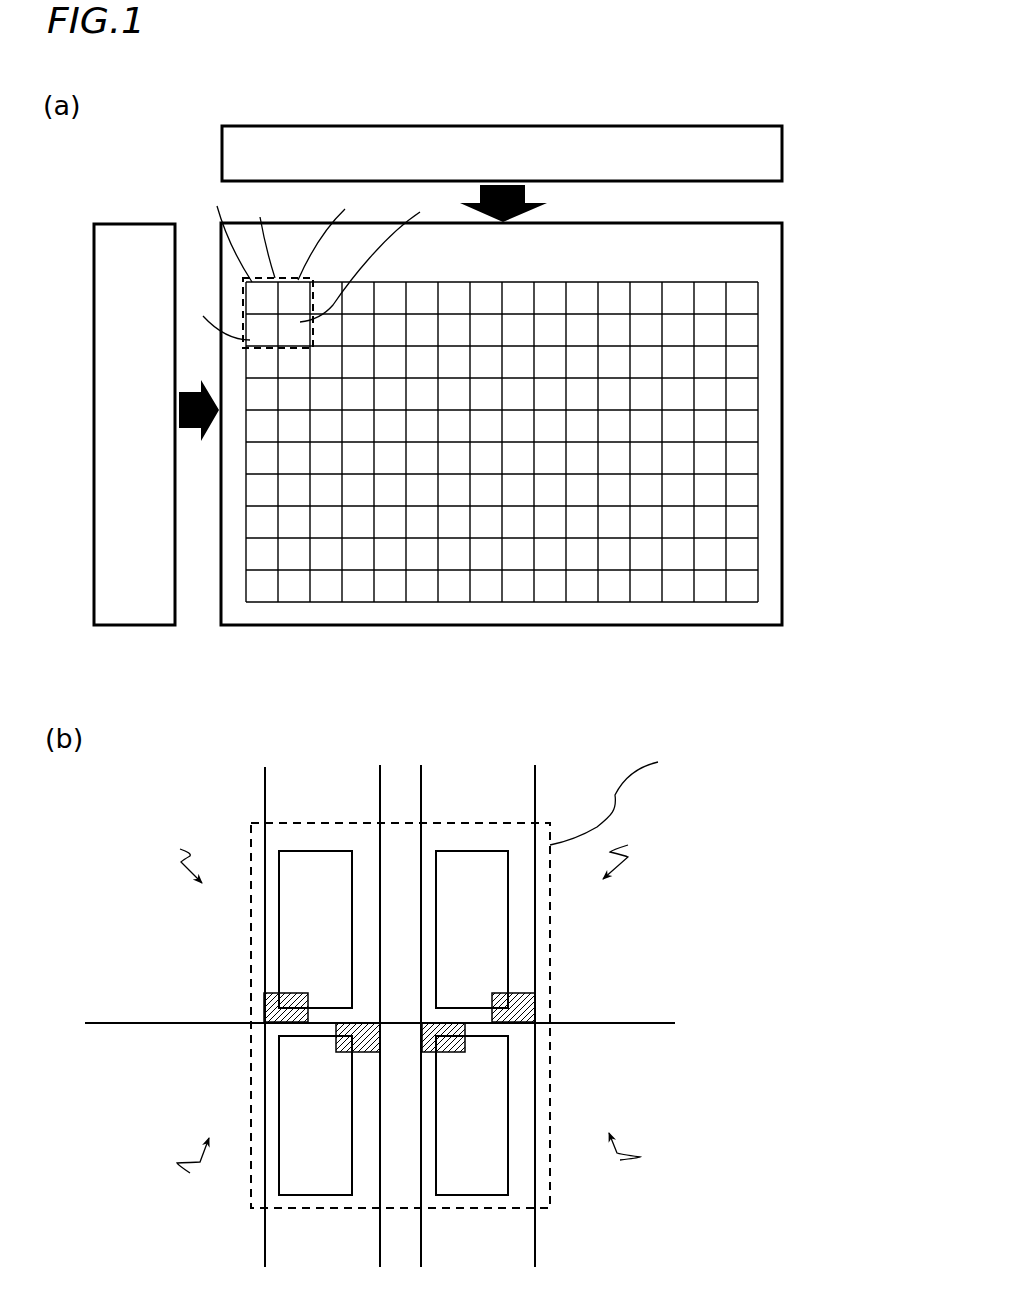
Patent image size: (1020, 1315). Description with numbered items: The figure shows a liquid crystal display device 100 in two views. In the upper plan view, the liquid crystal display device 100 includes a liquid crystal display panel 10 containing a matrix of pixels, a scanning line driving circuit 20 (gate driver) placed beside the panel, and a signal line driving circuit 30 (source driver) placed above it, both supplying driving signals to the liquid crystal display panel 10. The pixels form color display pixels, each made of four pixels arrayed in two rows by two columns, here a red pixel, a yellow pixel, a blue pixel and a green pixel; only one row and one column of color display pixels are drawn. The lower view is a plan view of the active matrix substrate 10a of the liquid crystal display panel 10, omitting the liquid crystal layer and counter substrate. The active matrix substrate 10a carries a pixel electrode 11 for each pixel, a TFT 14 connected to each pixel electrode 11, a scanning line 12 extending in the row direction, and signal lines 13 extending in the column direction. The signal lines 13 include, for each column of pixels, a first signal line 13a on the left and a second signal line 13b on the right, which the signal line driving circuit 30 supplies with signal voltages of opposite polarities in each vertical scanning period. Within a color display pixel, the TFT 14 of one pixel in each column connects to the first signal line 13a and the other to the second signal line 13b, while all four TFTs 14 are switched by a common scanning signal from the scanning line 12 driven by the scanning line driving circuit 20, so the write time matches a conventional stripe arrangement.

The liquid crystal display device 100 is at (656, 102).
The signal line driving circuit 30 is at (370, 125).
The scanning line driving circuit 20 is at (93, 405).
The liquid crystal display panel 10 is at (730, 255).
The active matrix substrate 10a is at (721, 863).
The pixel electrode 11 is at (278, 913).
The scanning line 12 is at (98, 1022).
The signal line 13 is at (406, 1004).
The first signal line 13a is at (264, 816).
The second signal line 13b is at (379, 808).
The TFT 14 is at (263, 1010).